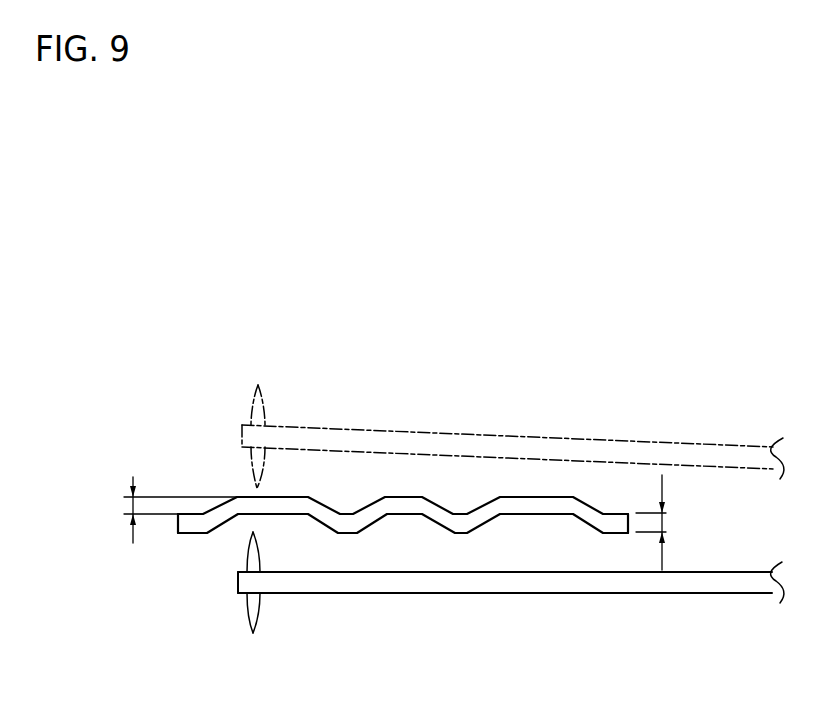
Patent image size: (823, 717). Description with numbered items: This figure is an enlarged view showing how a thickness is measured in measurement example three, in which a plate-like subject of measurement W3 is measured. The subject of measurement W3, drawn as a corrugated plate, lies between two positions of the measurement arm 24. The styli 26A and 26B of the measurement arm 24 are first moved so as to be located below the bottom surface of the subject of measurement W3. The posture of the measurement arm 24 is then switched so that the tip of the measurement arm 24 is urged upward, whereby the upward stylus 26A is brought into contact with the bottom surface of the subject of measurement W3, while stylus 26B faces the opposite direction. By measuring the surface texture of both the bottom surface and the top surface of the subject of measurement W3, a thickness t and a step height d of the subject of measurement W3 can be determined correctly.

The measurement arm 24 is at (504, 437).
The subject of measurement W3 is at (367, 512).
The upward stylus 26A is at (247, 550).
The stylus 26B is at (247, 615).
The step height d is at (171, 510).
The thickness t is at (659, 522).